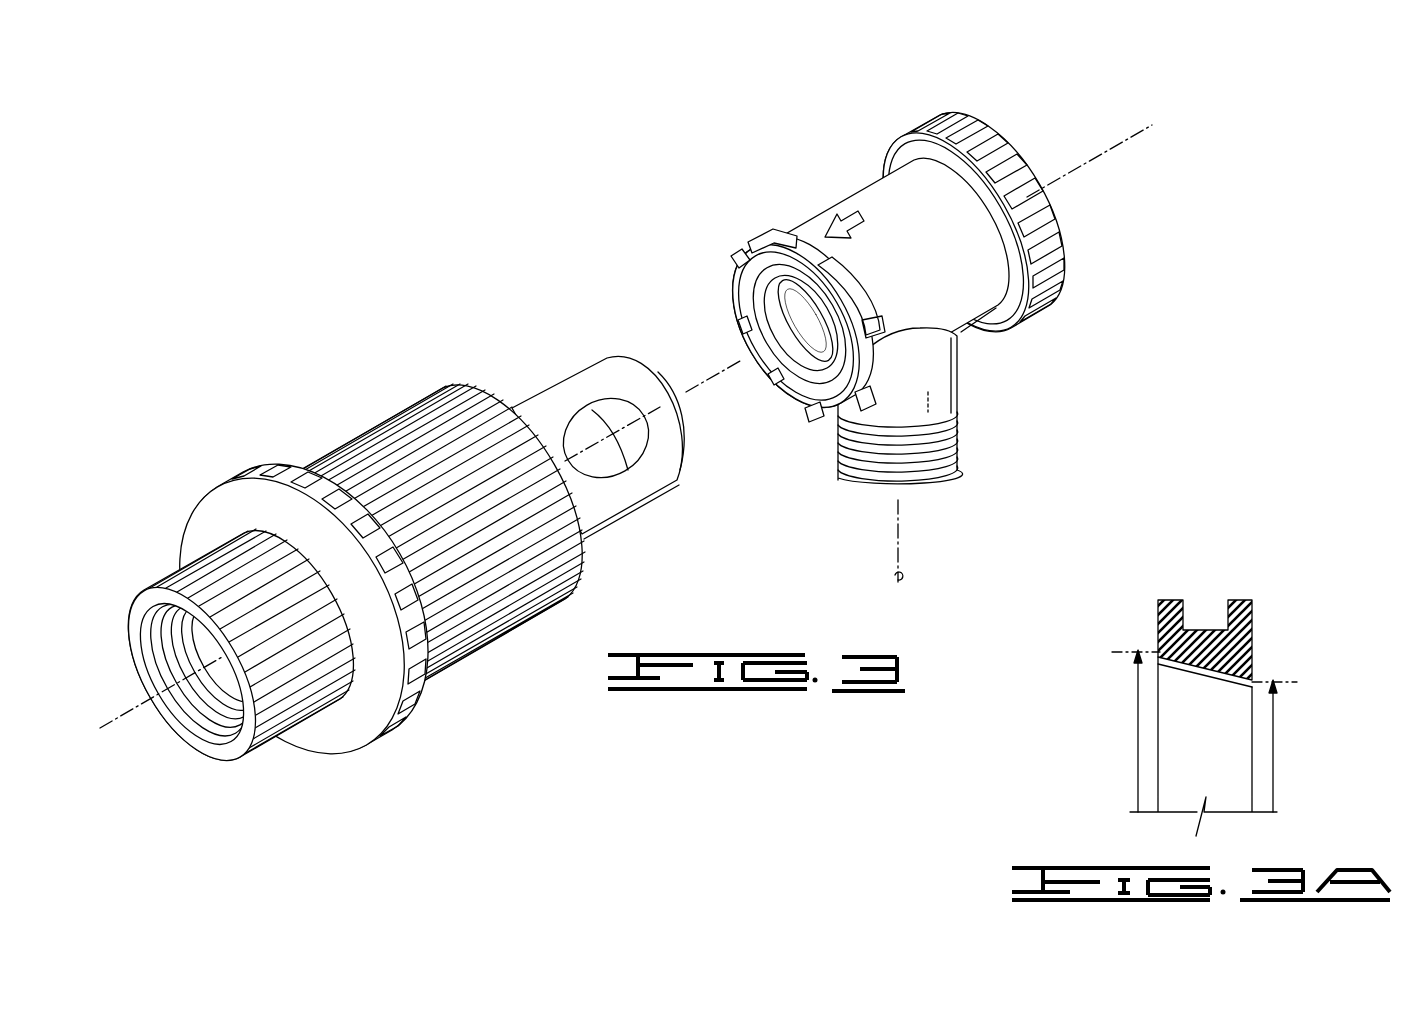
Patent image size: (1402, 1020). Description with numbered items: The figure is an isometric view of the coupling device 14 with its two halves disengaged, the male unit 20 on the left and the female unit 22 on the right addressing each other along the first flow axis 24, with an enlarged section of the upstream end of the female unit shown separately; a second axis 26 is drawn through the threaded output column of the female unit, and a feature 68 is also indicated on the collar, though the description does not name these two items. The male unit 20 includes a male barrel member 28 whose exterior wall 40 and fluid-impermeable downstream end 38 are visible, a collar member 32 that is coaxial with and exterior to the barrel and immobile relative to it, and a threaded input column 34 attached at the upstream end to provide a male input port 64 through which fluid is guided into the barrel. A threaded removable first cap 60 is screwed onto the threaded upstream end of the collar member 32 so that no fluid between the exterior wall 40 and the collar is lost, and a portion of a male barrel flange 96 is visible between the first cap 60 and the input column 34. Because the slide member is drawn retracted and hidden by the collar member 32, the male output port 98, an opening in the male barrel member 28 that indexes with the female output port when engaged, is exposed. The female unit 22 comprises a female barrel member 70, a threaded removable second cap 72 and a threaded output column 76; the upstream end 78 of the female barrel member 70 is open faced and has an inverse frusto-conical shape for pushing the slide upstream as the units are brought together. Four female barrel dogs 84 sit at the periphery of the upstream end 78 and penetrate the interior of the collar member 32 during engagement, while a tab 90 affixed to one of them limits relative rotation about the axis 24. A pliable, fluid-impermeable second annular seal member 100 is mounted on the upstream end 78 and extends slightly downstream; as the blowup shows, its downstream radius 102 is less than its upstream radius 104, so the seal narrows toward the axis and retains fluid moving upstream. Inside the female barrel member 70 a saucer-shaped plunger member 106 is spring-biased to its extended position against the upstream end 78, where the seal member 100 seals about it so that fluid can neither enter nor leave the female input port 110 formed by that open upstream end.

In FIG. 3, the coupling device 14 is at (468, 297).
In FIG. 3, the male unit 20 is at (403, 393).
In FIG. 3, the female unit 22 is at (972, 126).
In FIG. 3, the first flow axis 24 is at (1128, 133).
In FIG. 3, the transverse axis 26 is at (893, 578).
In FIG. 3, the male barrel member 28 is at (550, 397).
In FIG. 3, the collar member 32 is at (470, 655).
In FIG. 3, the threaded input column 34 is at (176, 573).
In FIG. 3, the downstream end 38 is at (682, 452).
In FIG. 3, the exterior wall 40 is at (560, 394).
In FIG. 3, the first cap 60 is at (330, 742).
In FIG. 3, the male input port 64 is at (203, 732).
In FIG. 3, the collar slots 68 is at (224, 543).
In FIG. 3, the female barrel member 70 is at (866, 180).
In FIG. 3, the second cap 72 is at (935, 134).
In FIG. 3, the threaded output column 76 is at (965, 424).
In FIG. 3, the upstream end 78 is at (748, 290).
In FIG. 3, the female barrel dogs 84 is at (774, 232).
In FIG. 3, the tab 90 is at (870, 318).
In FIG. 3, the male barrel flange 96 is at (211, 548).
In FIG. 3, the male output port 98 is at (627, 392).
In FIG. 3, the second annular seal member 100 is at (762, 258).
In FIG. 3A, the second annular seal member 100 is at (1158, 613).
In FIG. 3A, the downstream radius 102 is at (1273, 773).
In FIG. 3A, the upstream radius 104 is at (1138, 735).
In FIG. 3, the plunger member 106 is at (812, 353).
In FIG. 3, the female input port 110 is at (776, 324).